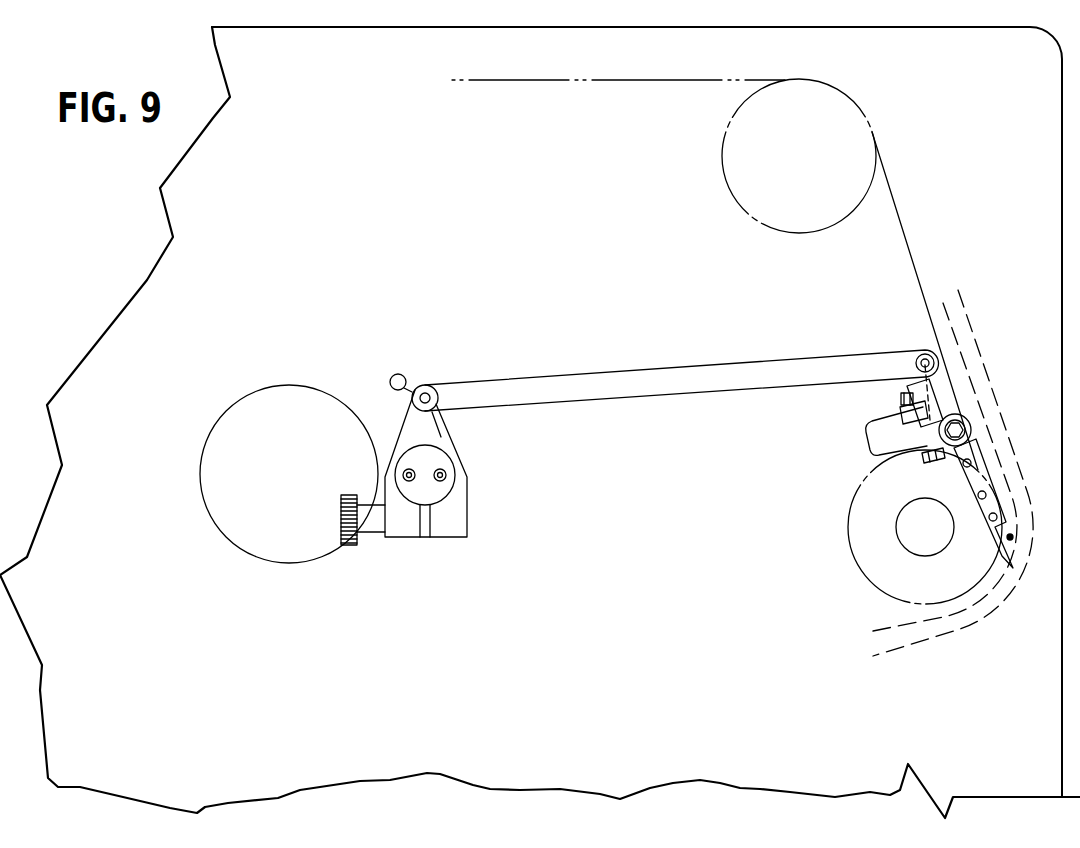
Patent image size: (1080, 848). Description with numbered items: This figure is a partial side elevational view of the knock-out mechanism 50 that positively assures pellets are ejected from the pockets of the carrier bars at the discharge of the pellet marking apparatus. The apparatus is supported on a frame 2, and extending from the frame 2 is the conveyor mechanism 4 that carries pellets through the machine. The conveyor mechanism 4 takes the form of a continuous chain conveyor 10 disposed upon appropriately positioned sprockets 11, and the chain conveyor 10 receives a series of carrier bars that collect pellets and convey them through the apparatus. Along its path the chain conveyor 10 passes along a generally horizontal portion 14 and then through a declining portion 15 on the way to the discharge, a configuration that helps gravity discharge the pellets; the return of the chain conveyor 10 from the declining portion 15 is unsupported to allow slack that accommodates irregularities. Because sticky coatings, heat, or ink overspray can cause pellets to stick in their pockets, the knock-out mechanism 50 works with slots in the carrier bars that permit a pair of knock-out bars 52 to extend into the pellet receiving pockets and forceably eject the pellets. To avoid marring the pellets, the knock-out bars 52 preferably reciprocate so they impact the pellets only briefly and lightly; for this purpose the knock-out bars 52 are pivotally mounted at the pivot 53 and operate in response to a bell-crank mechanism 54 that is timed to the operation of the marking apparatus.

The frame 2 is at (998, 726).
The conveyor mechanism 4 is at (801, 556).
The chain conveyor 10 is at (970, 622).
The sprockets 11 is at (857, 135).
The horizontal portion 14 is at (570, 66).
The declining portion 15 is at (919, 223).
The knock-out mechanism 50 is at (661, 487).
The knock-out bars 52 is at (1010, 500).
The pivot 53 is at (960, 425).
The bell-crank mechanism 54 is at (447, 381).